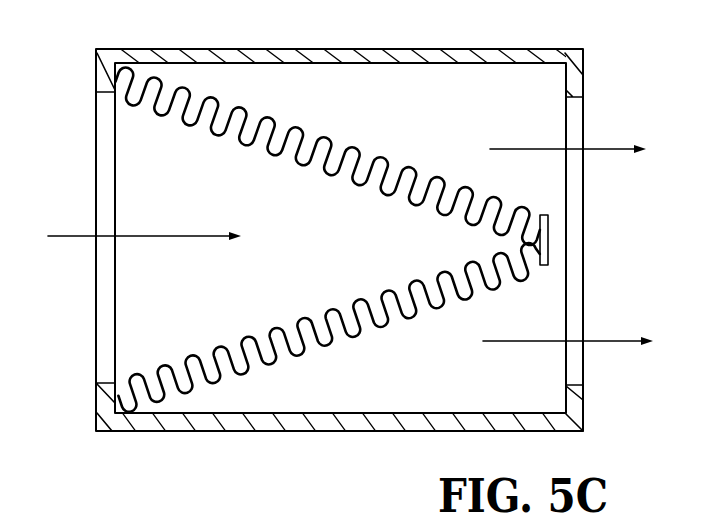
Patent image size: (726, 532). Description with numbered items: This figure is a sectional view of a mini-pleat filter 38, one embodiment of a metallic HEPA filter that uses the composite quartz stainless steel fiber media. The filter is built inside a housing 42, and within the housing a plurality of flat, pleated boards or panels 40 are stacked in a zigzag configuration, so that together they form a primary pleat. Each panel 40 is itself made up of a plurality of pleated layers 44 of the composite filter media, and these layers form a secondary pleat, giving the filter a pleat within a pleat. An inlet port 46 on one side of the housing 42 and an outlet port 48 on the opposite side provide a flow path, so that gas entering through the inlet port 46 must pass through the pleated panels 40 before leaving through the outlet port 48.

The mini-pleat filter 38 is at (550, 22).
The pleated boards or panels 40 is at (360, 130).
The housing 42 is at (583, 78).
The pleated layers 44 is at (303, 347).
The inlet port 46 is at (75, 188).
The outlet port 48 is at (619, 210).